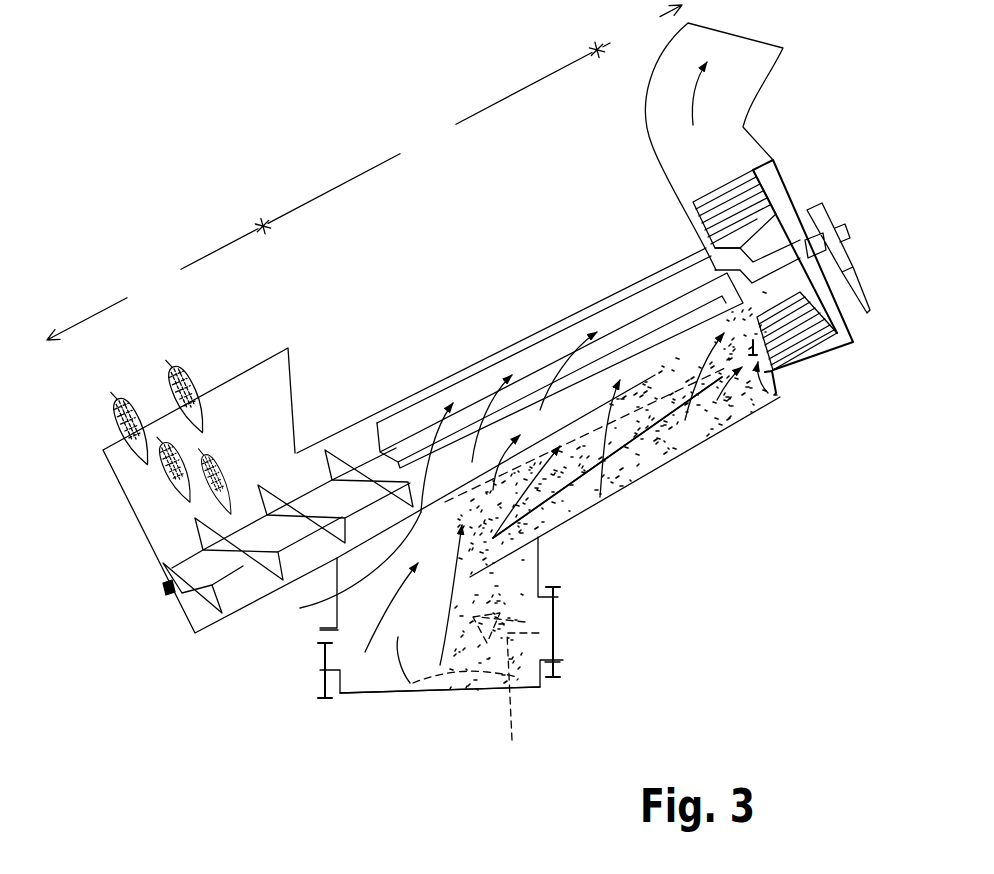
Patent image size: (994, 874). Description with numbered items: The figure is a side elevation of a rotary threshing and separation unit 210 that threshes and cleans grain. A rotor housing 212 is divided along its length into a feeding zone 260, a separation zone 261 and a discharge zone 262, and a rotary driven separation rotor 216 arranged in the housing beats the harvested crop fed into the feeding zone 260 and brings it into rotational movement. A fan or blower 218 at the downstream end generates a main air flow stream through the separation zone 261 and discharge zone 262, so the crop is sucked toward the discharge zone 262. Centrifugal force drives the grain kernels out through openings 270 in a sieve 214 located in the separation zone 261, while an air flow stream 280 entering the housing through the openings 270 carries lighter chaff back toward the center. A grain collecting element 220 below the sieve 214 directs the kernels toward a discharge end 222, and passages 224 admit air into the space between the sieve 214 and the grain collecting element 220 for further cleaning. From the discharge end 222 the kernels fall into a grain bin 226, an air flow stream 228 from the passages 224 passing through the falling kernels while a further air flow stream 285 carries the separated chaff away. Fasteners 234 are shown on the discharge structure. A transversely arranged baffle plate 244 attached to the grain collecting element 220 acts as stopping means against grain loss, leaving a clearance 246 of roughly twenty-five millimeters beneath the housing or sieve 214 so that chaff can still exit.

The rotary threshing and separation unit 210 is at (435, 360).
The rotor housing 212 is at (330, 430).
The sieve 214 is at (703, 442).
The separation rotor 216 is at (535, 383).
The fan or blower 218 is at (757, 207).
The grain collecting element 220 is at (650, 473).
The discharge end 222 is at (473, 578).
The passages 224 is at (316, 645).
The grain bin 226 is at (473, 698).
The air flow stream 228 is at (506, 697).
The fastener 234 is at (322, 690).
The baffle plate 244 is at (771, 374).
The clearance 246 is at (768, 395).
The feeding zone 260 is at (152, 284).
The separation zone 261 is at (423, 143).
The discharge zone 262 is at (635, 29).
The openings 270 is at (649, 378).
The air flow stream 280 is at (357, 588).
The air flow stream 285 is at (398, 637).